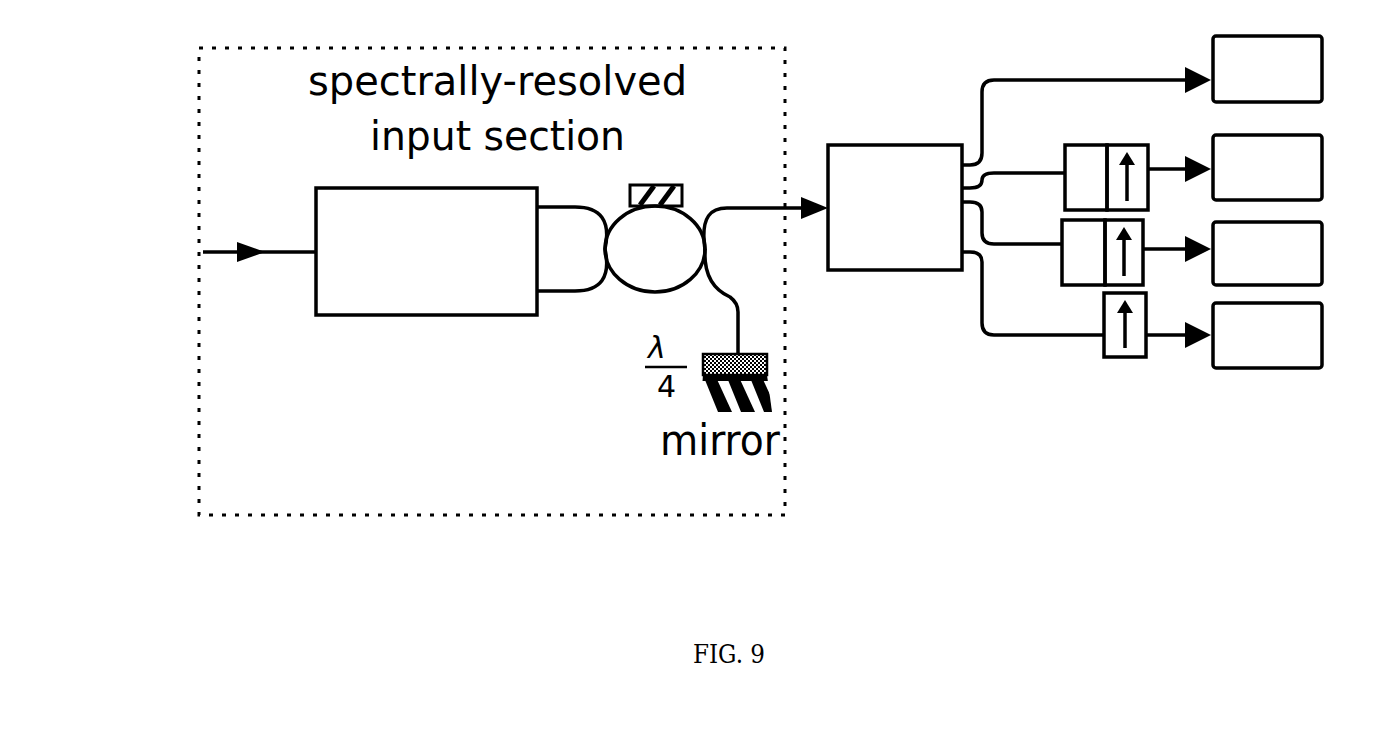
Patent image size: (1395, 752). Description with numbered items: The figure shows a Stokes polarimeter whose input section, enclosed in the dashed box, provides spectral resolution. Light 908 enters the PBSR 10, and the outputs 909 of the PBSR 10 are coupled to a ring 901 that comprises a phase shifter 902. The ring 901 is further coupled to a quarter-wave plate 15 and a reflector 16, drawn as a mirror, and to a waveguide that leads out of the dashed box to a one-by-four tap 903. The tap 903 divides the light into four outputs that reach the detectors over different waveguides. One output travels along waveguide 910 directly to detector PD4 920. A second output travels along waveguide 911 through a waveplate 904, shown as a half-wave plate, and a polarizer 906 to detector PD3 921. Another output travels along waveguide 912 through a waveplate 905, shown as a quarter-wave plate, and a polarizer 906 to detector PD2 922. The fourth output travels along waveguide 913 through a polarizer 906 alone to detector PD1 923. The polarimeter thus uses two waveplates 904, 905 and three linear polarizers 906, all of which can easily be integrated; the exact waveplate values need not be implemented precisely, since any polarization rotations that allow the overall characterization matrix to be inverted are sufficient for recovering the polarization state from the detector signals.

The PBSR 10 is at (353, 303).
The quarter-wave plate 15 is at (773, 359).
The reflector 16 is at (777, 400).
The ring 901 is at (621, 293).
The phase shifter 902 is at (667, 173).
The 1×4 tap 903 is at (893, 287).
The waveplate 904 is at (1083, 141).
The waveplate 905 is at (1058, 269).
The polarizer 906 is at (1149, 307).
The light 908 is at (183, 248).
The outputs 909 is at (557, 214).
The waveguide 910 is at (1002, 70).
The waveguide 911 is at (1001, 166).
The waveguide 912 is at (1001, 236).
The waveguide 913 is at (1001, 328).
The detector PD4 920 is at (1291, 69).
The detector PD3 921 is at (1291, 167).
The detector PD2 922 is at (1291, 253).
The detector PD1 923 is at (1291, 335).